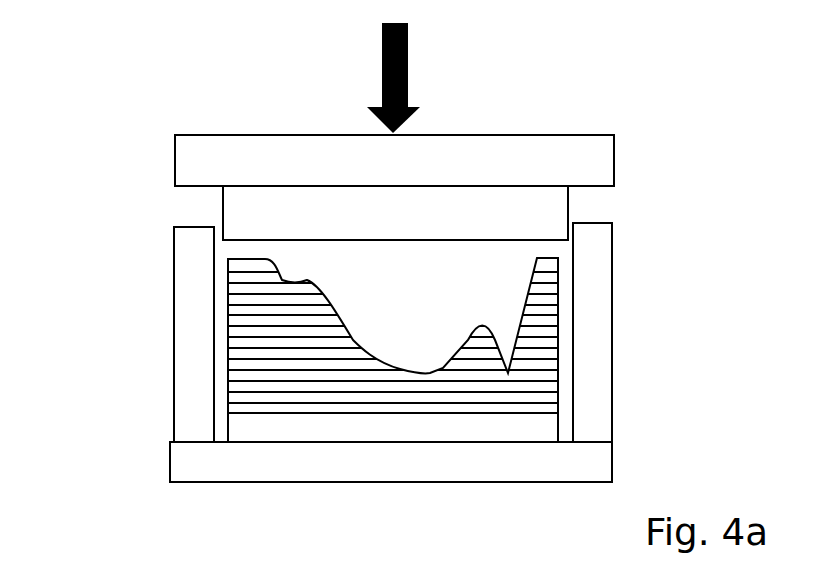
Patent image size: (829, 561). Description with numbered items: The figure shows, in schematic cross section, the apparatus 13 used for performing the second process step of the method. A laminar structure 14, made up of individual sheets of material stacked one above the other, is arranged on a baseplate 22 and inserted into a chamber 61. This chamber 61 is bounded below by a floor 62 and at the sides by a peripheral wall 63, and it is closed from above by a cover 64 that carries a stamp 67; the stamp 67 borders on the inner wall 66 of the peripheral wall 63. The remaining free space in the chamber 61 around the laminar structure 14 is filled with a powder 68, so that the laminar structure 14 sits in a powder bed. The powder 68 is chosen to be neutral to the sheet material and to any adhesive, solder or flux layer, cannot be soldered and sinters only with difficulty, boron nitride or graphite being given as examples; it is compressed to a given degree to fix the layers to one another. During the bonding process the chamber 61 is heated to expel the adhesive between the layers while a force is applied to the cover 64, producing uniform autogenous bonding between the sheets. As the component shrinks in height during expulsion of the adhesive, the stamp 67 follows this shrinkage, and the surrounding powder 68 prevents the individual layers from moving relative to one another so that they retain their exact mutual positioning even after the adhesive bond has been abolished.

The apparatus 13 is at (527, 95).
The laminar structure 14 is at (327, 385).
The baseplate 22 is at (518, 432).
The chamber 61 is at (512, 254).
The floor 62 is at (235, 453).
The peripheral wall 63 is at (200, 363).
The cover 64 is at (583, 165).
The inner wall 66 is at (213, 323).
The stamp 67 is at (255, 198).
The powder 68 is at (267, 250).